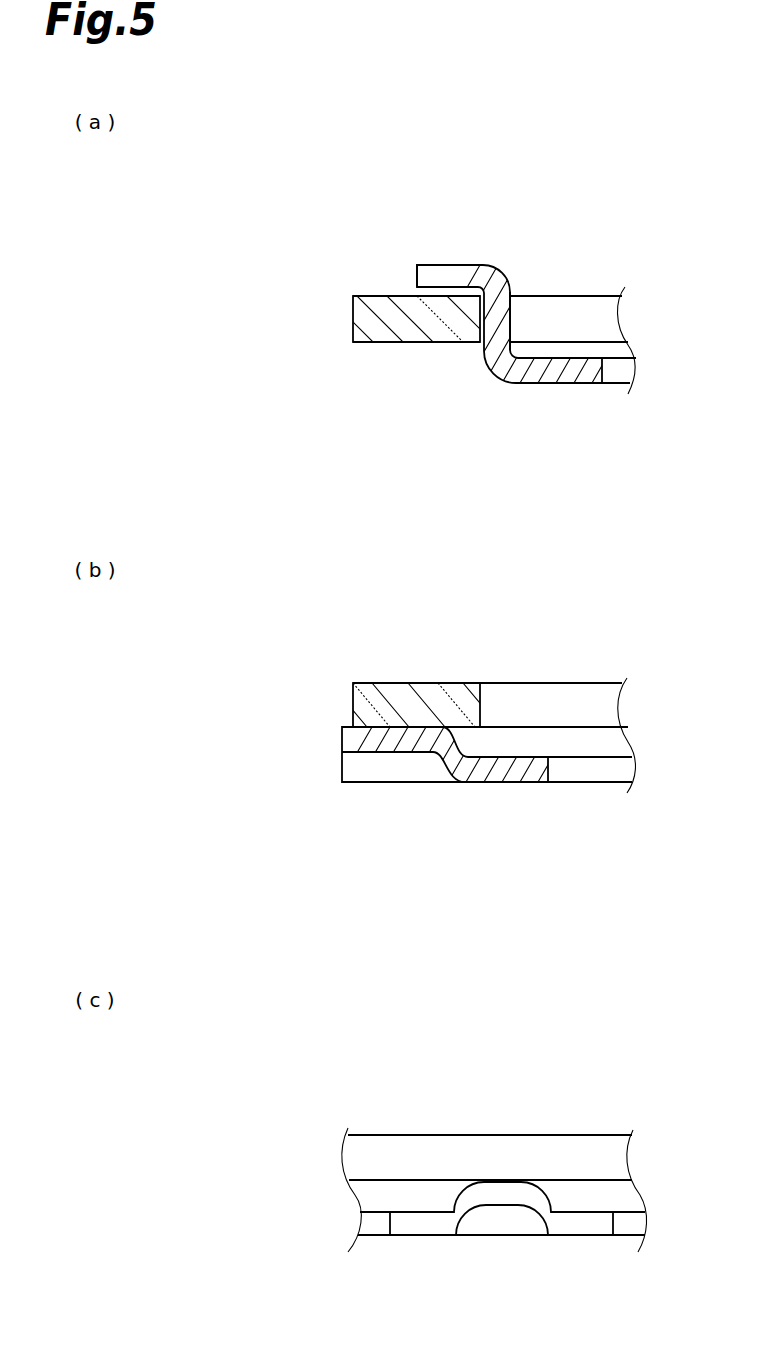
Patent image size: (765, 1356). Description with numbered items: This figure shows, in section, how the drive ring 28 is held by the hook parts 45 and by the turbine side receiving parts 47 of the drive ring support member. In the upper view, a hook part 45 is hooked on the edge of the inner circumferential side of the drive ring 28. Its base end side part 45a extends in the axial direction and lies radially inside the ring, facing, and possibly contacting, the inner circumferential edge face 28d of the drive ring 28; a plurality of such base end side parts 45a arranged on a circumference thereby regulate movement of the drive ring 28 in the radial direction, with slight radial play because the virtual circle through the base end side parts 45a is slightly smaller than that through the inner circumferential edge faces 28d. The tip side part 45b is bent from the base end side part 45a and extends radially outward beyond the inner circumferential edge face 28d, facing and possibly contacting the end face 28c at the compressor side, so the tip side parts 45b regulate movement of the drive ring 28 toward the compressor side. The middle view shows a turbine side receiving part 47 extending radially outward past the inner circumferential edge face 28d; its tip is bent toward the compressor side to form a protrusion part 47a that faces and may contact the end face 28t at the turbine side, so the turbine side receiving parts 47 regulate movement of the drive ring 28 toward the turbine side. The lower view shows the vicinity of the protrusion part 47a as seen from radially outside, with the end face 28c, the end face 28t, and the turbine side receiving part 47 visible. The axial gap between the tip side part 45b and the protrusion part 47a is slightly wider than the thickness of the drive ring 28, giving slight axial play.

The drive ring 28 is at (370, 319).
The end face at the compressor side 28c is at (375, 296).
The end face at the turbine side 28t is at (368, 343).
The inner circumferential edge face 28d is at (485, 305).
The hook part 45 is at (471, 257).
The base end side part 45a is at (498, 322).
The tip side part 45b is at (435, 265).
The turbine side receiving part 47 is at (338, 777).
The protrusion part 47a is at (362, 738).